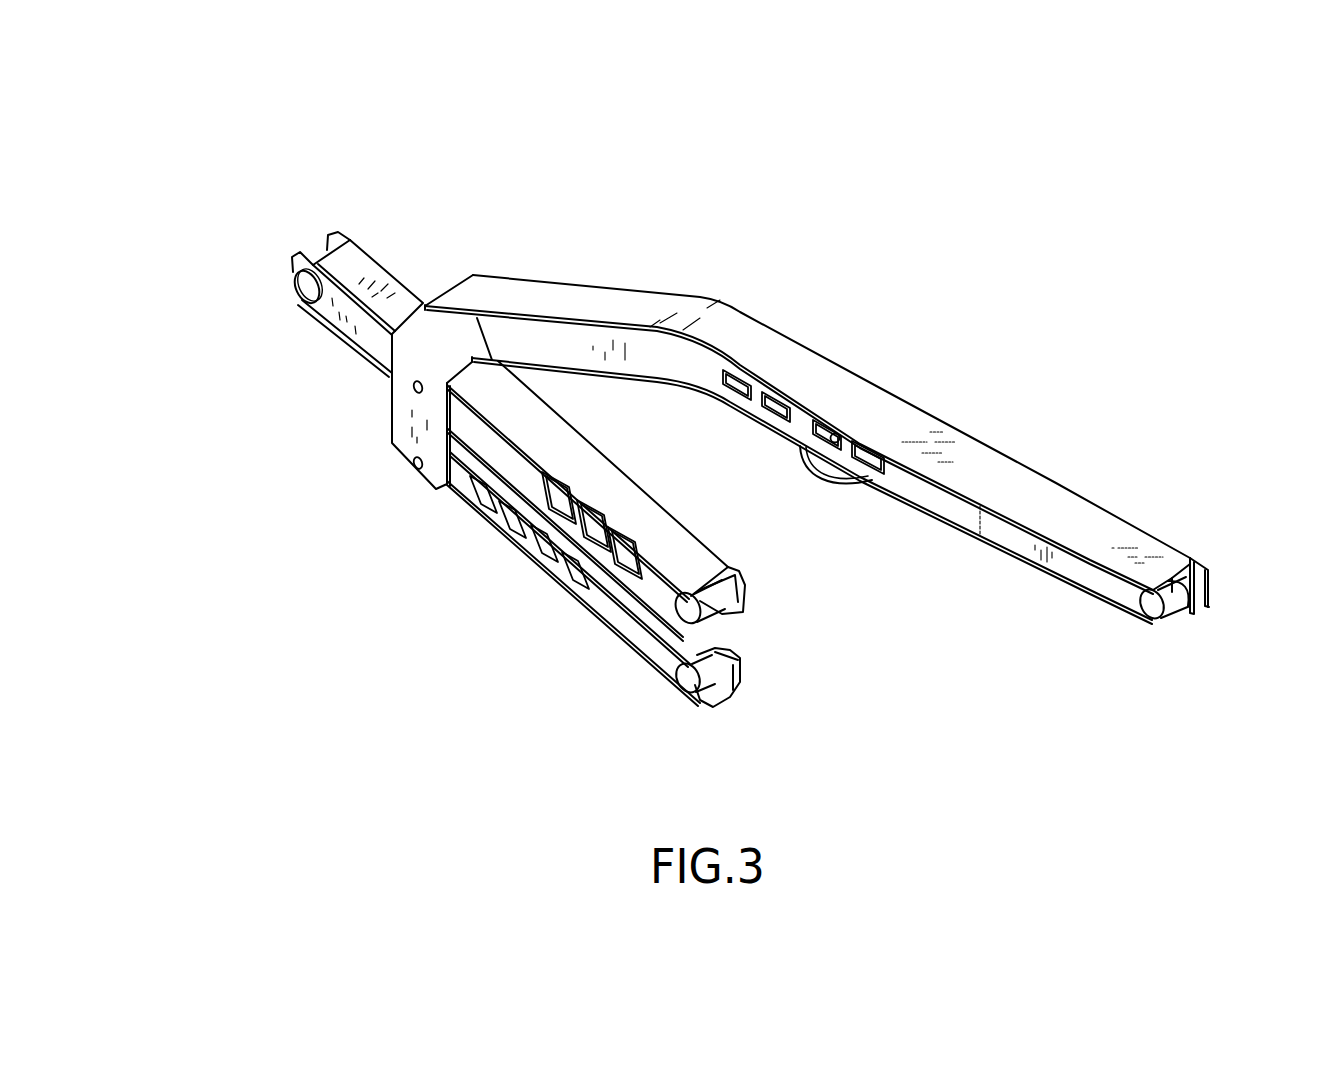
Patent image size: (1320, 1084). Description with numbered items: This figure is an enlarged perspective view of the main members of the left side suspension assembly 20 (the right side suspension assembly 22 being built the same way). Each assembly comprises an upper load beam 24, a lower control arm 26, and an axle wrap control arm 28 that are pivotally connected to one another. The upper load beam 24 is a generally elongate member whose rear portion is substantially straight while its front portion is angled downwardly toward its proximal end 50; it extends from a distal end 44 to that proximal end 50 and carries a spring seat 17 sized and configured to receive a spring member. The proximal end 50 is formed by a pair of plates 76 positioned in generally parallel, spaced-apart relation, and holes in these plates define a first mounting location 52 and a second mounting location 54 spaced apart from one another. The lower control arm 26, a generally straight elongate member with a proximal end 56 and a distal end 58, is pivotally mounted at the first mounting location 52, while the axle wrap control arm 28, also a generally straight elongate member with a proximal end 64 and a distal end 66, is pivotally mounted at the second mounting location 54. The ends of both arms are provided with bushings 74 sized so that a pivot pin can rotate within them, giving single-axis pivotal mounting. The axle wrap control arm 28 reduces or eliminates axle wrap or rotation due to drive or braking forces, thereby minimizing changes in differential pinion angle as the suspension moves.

The spring seat 17 is at (848, 486).
The suspension assembly 20 is at (232, 176).
The suspension assembly 22 is at (715, 466).
The upper load beam 24 is at (1004, 457).
The lower control arm 26 is at (630, 473).
The axle wrap control arm 28 is at (597, 620).
The distal end 44 is at (1148, 538).
The proximal end 50 is at (392, 449).
The first mounting location 52 is at (413, 386).
The second mounting location 54 is at (413, 466).
The proximal end 56 is at (720, 552).
The distal end 58 is at (371, 252).
The proximal end 64 is at (655, 672).
The distal end 66 is at (468, 503).
The bushing 74 is at (293, 278).
The plates 76 is at (392, 404).